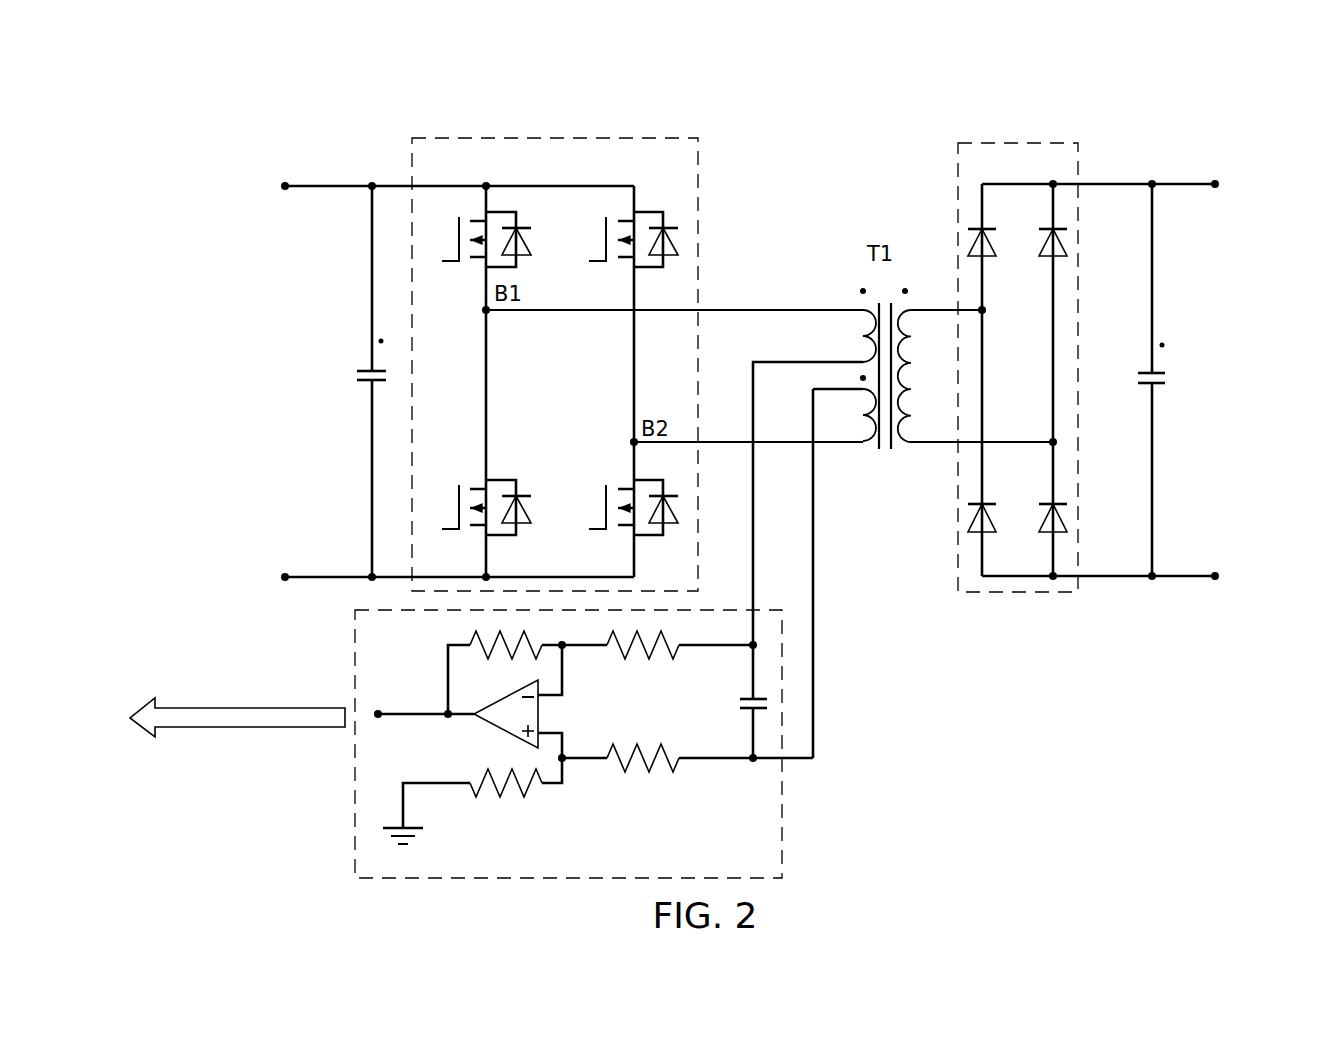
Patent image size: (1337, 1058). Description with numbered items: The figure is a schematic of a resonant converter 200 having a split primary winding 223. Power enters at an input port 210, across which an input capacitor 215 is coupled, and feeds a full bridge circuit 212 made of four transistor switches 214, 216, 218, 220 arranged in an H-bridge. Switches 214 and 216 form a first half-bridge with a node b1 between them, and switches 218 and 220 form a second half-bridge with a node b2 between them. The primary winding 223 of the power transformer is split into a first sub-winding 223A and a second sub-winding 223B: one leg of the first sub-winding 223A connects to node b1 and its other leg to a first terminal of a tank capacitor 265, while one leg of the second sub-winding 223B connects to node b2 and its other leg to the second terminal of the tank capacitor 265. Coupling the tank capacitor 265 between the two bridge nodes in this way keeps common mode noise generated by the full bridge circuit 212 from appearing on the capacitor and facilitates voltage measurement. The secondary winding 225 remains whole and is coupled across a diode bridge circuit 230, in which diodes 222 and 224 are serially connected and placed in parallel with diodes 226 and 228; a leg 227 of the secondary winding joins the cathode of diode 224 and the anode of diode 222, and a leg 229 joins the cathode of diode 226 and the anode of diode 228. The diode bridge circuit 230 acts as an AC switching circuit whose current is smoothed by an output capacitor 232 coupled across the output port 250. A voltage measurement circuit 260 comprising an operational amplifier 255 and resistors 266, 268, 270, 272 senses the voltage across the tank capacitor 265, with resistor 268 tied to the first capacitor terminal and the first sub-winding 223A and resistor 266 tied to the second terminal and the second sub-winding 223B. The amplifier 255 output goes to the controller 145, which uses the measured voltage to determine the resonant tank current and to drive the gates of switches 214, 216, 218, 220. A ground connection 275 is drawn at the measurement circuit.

The resonant converter 200 is at (1252, 112).
The input port 210 is at (232, 387).
The full bridge circuit 212 is at (623, 136).
The switch 214 is at (497, 209).
The input capacitor 215 is at (367, 371).
The switch 216 is at (508, 478).
The switch 218 is at (654, 209).
The switch 220 is at (617, 487).
The diode 222 is at (990, 247).
The primary winding 223 is at (681, 509).
The first sub-winding 223A is at (862, 337).
The second sub-winding 223B is at (863, 409).
The diode 224 is at (969, 530).
The secondary winding 225 is at (899, 305).
The diode 226 is at (1056, 504).
The leg of the secondary winding 227 is at (930, 305).
The diode 228 is at (1056, 229).
The leg of the secondary winding 229 is at (908, 445).
The diode bridge circuit 230 is at (1012, 140).
The output capacitor 232 is at (1162, 372).
The output port 250 is at (1228, 284).
The operational amplifier 255 is at (541, 714).
The voltage measurement circuit 260 is at (782, 835).
The tank capacitor 265 is at (758, 698).
The resistor 266 is at (646, 775).
The resistor 268 is at (646, 665).
The resistor 270 is at (490, 660).
The resistor 272 is at (543, 800).
The ground 275 is at (418, 837).
The controller 145 is at (250, 730).